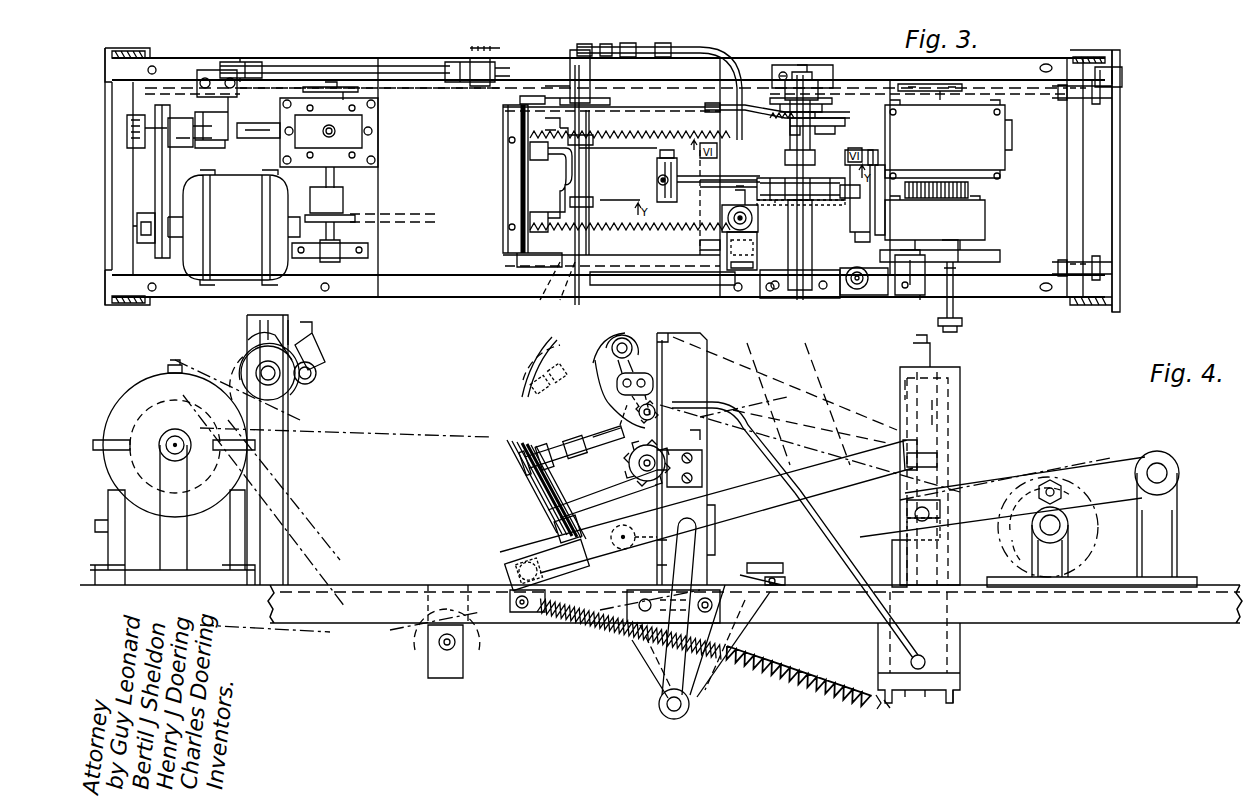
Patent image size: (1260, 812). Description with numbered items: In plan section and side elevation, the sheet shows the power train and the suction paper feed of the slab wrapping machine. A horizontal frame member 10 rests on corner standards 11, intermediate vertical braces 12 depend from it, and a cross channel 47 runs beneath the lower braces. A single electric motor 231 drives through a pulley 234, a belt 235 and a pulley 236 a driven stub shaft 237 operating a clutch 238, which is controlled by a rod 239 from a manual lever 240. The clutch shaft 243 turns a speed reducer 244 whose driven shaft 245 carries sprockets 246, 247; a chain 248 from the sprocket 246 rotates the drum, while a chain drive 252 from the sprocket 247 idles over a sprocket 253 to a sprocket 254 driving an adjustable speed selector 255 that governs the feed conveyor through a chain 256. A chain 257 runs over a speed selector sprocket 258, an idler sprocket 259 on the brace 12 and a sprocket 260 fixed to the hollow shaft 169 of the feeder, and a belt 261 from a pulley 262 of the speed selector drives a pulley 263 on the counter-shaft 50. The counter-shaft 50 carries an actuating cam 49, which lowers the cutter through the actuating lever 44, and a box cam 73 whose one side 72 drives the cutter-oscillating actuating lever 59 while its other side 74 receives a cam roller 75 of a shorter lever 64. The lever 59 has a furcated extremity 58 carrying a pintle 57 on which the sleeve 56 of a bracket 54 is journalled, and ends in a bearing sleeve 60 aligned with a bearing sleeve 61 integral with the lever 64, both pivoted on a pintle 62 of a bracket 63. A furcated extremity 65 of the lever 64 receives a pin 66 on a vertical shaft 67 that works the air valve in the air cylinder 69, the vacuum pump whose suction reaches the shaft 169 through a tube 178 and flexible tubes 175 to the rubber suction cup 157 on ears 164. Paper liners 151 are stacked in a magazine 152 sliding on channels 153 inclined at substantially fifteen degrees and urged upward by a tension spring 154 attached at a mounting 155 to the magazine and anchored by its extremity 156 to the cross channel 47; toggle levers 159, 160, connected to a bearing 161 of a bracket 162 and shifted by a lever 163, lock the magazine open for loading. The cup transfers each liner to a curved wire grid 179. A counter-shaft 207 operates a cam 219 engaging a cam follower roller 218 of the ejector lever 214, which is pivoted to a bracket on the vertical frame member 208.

In FIG. 3, the horizontal frame member 10 is at (790, 64).
In FIG. 4, the horizontal frame member 10 is at (1039, 636).
In FIG. 3, the corner standards 11 is at (151, 50).
In FIG. 3, the intermediate vertical braces 12 is at (578, 290).
In FIG. 4, the intermediate vertical braces 12 is at (700, 342).
In FIG. 3, the actuating lever 44 is at (762, 100).
In FIG. 4, the cross channel 47 is at (957, 678).
In FIG. 3, the actuating cam 49 is at (795, 128).
In FIG. 3, the counter-shaft 50 is at (805, 156).
In FIG. 4, the counter-shaft 50 is at (1030, 545).
In FIG. 3, the bracket 54 is at (660, 191).
In FIG. 3, the sleeve 56 is at (657, 171).
In FIG. 3, the pintle 57 is at (668, 158).
In FIG. 3, the furcated extremity 58 is at (677, 191).
In FIG. 3, the actuating lever 59 is at (702, 178).
In FIG. 3, the bearing sleeve 60 is at (880, 175).
In FIG. 3, the bearing sleeve 61 is at (875, 218).
In FIG. 3, the pintle 62 is at (862, 232).
In FIG. 3, the bracket 63 is at (870, 170).
In FIG. 4, the bracket 63 is at (1145, 531).
In FIG. 3, the lever 64 is at (780, 215).
In FIG. 4, the lever 64 is at (1085, 478).
In FIG. 3, the furcated extremity 65 is at (742, 251).
In FIG. 4, the furcated extremity 65 is at (605, 400).
In FIG. 4, the pin 66 is at (908, 508).
In FIG. 3, the vertical shaft 67 is at (730, 238).
In FIG. 4, the vertical shaft 67 is at (935, 349).
In FIG. 3, the air cylinder 69 is at (728, 218).
In FIG. 4, the air cylinder 69 is at (895, 561).
In FIG. 3, the one side of box cam 72 is at (770, 182).
In FIG. 3, the box cam 73 is at (792, 205).
In FIG. 3, the other side of box cam 74 is at (822, 205).
In FIG. 4, the cam roller 75 is at (1048, 480).
In FIG. 3, the paper liners 151 is at (521, 186).
In FIG. 4, the paper liners 151 is at (520, 500).
In FIG. 3, the magazine or rack 152 is at (505, 189).
In FIG. 4, the magazine or rack 152 is at (535, 522).
In FIG. 4, the channels 153 is at (766, 502).
In FIG. 3, the tension spring 154 is at (628, 130).
In FIG. 4, the tension spring 154 is at (615, 640).
In FIG. 4, the spring mounting 155 is at (520, 612).
In FIG. 4, the spring extremity 156 is at (886, 688).
In FIG. 3, the rubber suction cup 157 is at (548, 200).
In FIG. 4, the rubber suction cup 157 is at (592, 438).
In FIG. 4, the toggle lever 159 is at (740, 578).
In FIG. 4, the toggle lever 160 is at (740, 643).
In FIG. 4, the bearing 161 is at (681, 716).
In FIG. 4, the bracket 162 is at (655, 690).
In FIG. 4, the lever 163 is at (660, 700).
In FIG. 4, the ears 164 is at (628, 465).
In FIG. 3, the hollow shaft 169 is at (576, 124).
In FIG. 4, the hollow shaft 169 is at (700, 392).
In FIG. 3, the flexible tubes 175 is at (593, 151).
In FIG. 4, the flexible tubes 175 is at (636, 445).
In FIG. 3, the tube 178 is at (705, 50).
In FIG. 4, the tube 178 is at (856, 522).
In FIG. 4, the curved wire grid 179 is at (548, 362).
In FIG. 4, the counter-shaft 207 is at (282, 378).
In FIG. 4, the vertical frame member 208 is at (280, 468).
In FIG. 4, the lever 214 is at (320, 358).
In FIG. 4, the cam follower roller 218 is at (320, 382).
In FIG. 4, the cam 219 is at (260, 352).
In FIG. 3, the electric motor 231 is at (234, 227).
In FIG. 3, the pulley 234 is at (150, 243).
In FIG. 3, the belt 235 is at (160, 178).
In FIG. 3, the pulley 236 is at (140, 104).
In FIG. 3, the driven stub shaft 237 is at (140, 128).
In FIG. 3, the clutch 238 is at (222, 122).
In FIG. 3, the rod 239 is at (330, 72).
In FIG. 3, the manual lever 240 is at (470, 68).
In FIG. 3, the shaft 243 is at (250, 138).
In FIG. 3, the speed reducer 244 is at (345, 143).
In FIG. 4, the speed reducer 244 is at (138, 392).
In FIG. 3, the driven shaft 245 is at (335, 183).
In FIG. 4, the driven shaft 245 is at (168, 455).
In FIG. 3, the sprocket 246 is at (350, 225).
In FIG. 3, the sprocket 247 is at (305, 90).
In FIG. 4, the sprocket 247 is at (140, 436).
In FIG. 3, the chain 248 is at (410, 218).
In FIG. 3, the chain drive 252 is at (403, 88).
In FIG. 4, the chain drive 252 is at (464, 431).
In FIG. 3, the sprocket 253 is at (520, 72).
In FIG. 4, the sprocket 253 is at (430, 660).
In FIG. 3, the sprocket 254 is at (815, 95).
In FIG. 3, the adjustable speed selector 255 is at (991, 203).
In FIG. 3, the chain 256 is at (874, 66).
In FIG. 3, the chain 257 is at (704, 274).
In FIG. 4, the chain 257 is at (840, 430).
In FIG. 3, the speed selector sprocket 258 is at (862, 296).
In FIG. 4, the speed selector sprocket 258 is at (1080, 561).
In FIG. 3, the idler sprocket 259 is at (570, 285).
In FIG. 4, the sprocket 260 is at (640, 350).
In FIG. 3, the belt 261 is at (912, 292).
In FIG. 3, the pulley 262 is at (955, 254).
In FIG. 3, the pulley 263 is at (770, 292).